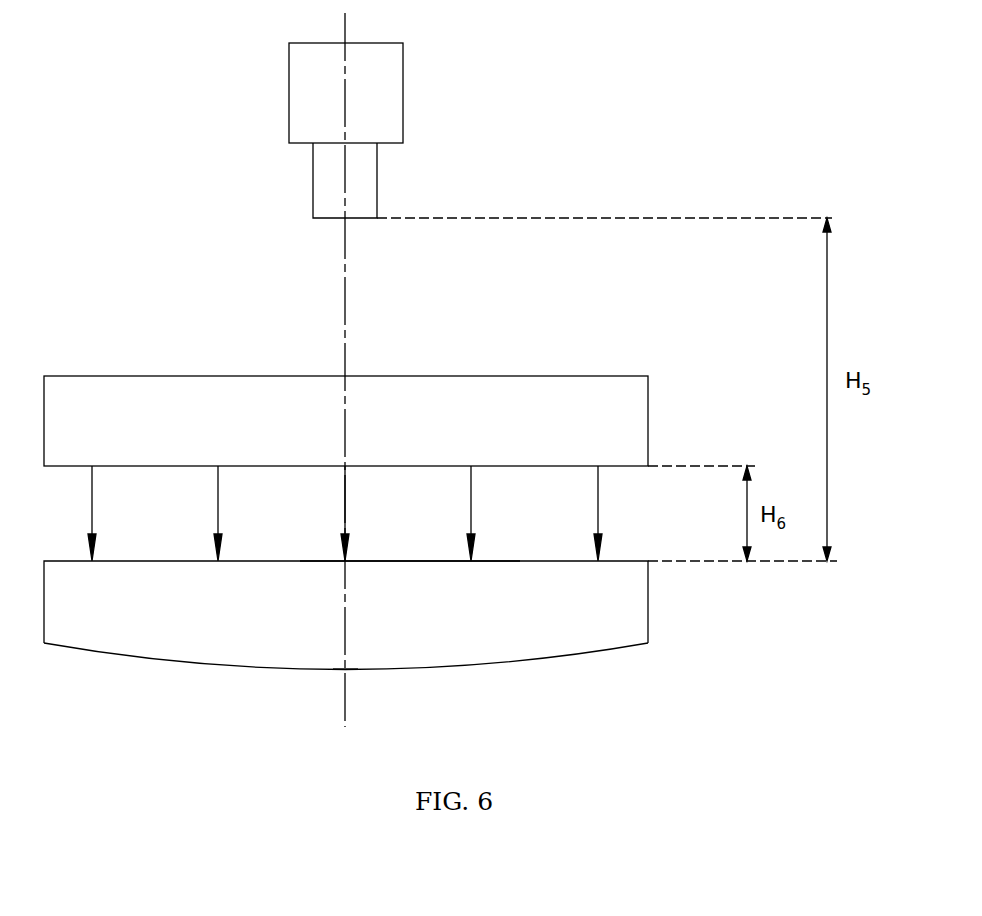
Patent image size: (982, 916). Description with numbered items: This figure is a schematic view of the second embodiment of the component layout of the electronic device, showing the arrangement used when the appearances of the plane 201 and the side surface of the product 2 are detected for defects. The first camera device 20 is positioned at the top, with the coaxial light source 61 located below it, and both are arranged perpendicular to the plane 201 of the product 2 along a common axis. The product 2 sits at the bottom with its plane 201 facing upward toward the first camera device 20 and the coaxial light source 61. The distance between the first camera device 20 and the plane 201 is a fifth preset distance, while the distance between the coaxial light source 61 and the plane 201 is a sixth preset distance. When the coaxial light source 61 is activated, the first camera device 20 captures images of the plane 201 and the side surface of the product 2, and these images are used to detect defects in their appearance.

The first camera device 20 is at (368, 86).
The coaxial light source 61 is at (617, 419).
The product 2 is at (214, 650).
The plane 201 is at (415, 562).